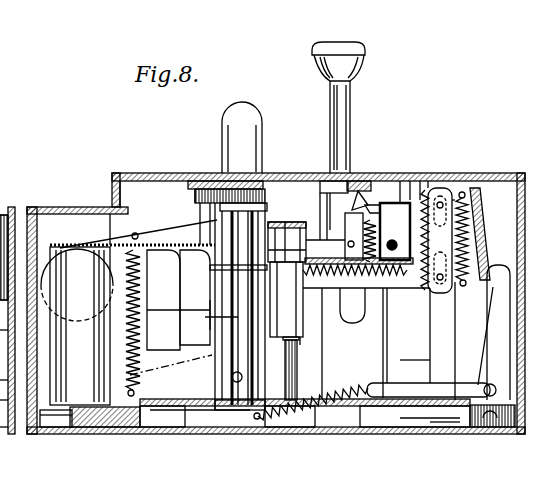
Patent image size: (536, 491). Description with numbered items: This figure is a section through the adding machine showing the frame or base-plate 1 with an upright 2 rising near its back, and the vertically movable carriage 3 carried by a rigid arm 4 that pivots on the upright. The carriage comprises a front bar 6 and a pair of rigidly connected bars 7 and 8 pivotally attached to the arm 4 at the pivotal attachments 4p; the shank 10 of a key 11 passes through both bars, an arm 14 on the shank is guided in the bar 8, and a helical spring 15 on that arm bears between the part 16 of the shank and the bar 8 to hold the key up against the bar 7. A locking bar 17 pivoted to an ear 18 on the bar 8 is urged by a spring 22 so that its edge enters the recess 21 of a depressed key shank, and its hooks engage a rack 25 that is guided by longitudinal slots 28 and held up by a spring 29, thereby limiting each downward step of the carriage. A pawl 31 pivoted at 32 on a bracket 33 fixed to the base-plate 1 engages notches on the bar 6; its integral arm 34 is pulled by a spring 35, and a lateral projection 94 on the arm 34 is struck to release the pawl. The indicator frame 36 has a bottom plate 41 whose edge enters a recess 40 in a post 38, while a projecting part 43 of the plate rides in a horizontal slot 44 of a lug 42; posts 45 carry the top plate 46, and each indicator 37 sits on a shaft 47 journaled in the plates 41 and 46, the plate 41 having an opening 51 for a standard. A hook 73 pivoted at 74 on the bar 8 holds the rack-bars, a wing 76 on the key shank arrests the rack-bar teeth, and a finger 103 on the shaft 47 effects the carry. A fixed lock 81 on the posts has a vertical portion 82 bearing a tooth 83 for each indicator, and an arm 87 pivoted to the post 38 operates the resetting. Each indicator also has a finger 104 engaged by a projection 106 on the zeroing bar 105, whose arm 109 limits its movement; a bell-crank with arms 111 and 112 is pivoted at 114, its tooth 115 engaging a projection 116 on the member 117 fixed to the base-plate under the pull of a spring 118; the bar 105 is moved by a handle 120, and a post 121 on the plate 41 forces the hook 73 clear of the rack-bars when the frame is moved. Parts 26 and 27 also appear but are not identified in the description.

The frame or base-plate 1 is at (222, 432).
The uprights 2 is at (45, 428).
The vertically movable carriage 3 is at (190, 312).
The rigid arm 4 is at (396, 288).
The pivotal attachment 4p is at (334, 236).
The front bar 6 is at (483, 240).
The bar 7 is at (358, 185).
The bar 8 is at (352, 288).
The key shank 10 is at (350, 132).
The key 11 is at (364, 60).
The arm 14 is at (359, 230).
The helical spring 15 is at (388, 215).
The part of key shank 16 is at (392, 200).
The bar 17 is at (432, 195).
The ear 18 is at (393, 245).
The recess 21 is at (418, 190).
The spring 22 is at (312, 252).
The rack 25 is at (440, 195).
The slide 26 is at (436, 352).
The slide body 27 is at (432, 295).
The longitudinal slots 28 is at (436, 240).
The spring 29 is at (470, 210).
The pawl 31 is at (490, 290).
The pivot 32 is at (476, 382).
The bracket 33 is at (485, 340).
The arm 34 is at (395, 390).
The spring 35 is at (330, 342).
The transversely movable frame 36 is at (90, 244).
The indicator 37 is at (262, 180).
The post 38 is at (72, 408).
The groove or recess 40 is at (118, 408).
The bottom plate 41 is at (182, 428).
The lug 42 is at (460, 420).
The projecting part 43 is at (437, 446).
The horizontal slot 44 is at (400, 427).
The post 45 is at (216, 386).
The top plate 46 is at (242, 190).
The shaft 47 is at (212, 348).
The opening 51 is at (305, 408).
The hook 73 is at (305, 318).
The pivot 74 is at (283, 368).
The wing or stop 76 is at (310, 240).
The fixed lock 81 is at (130, 238).
The vertical portion 82 is at (207, 335).
The fixed tooth 83 is at (210, 300).
The arm 87 is at (40, 427).
The lateral projection 94 is at (392, 408).
The finger 103 is at (290, 320).
The finger 104 is at (328, 200).
The bar 105 is at (323, 195).
The lateral projection 106 is at (286, 220).
The laterally projecting arm 109 is at (137, 428).
The bell-crank arm 111 is at (208, 232).
The bell-crank arm 112 is at (205, 235).
The pivot 114 is at (210, 165).
The tooth 115 is at (108, 200).
The projection 116 is at (170, 258).
The member 117 is at (178, 297).
The spring 118 is at (105, 240).
The handle 120 is at (255, 102).
The post 121 is at (258, 435).